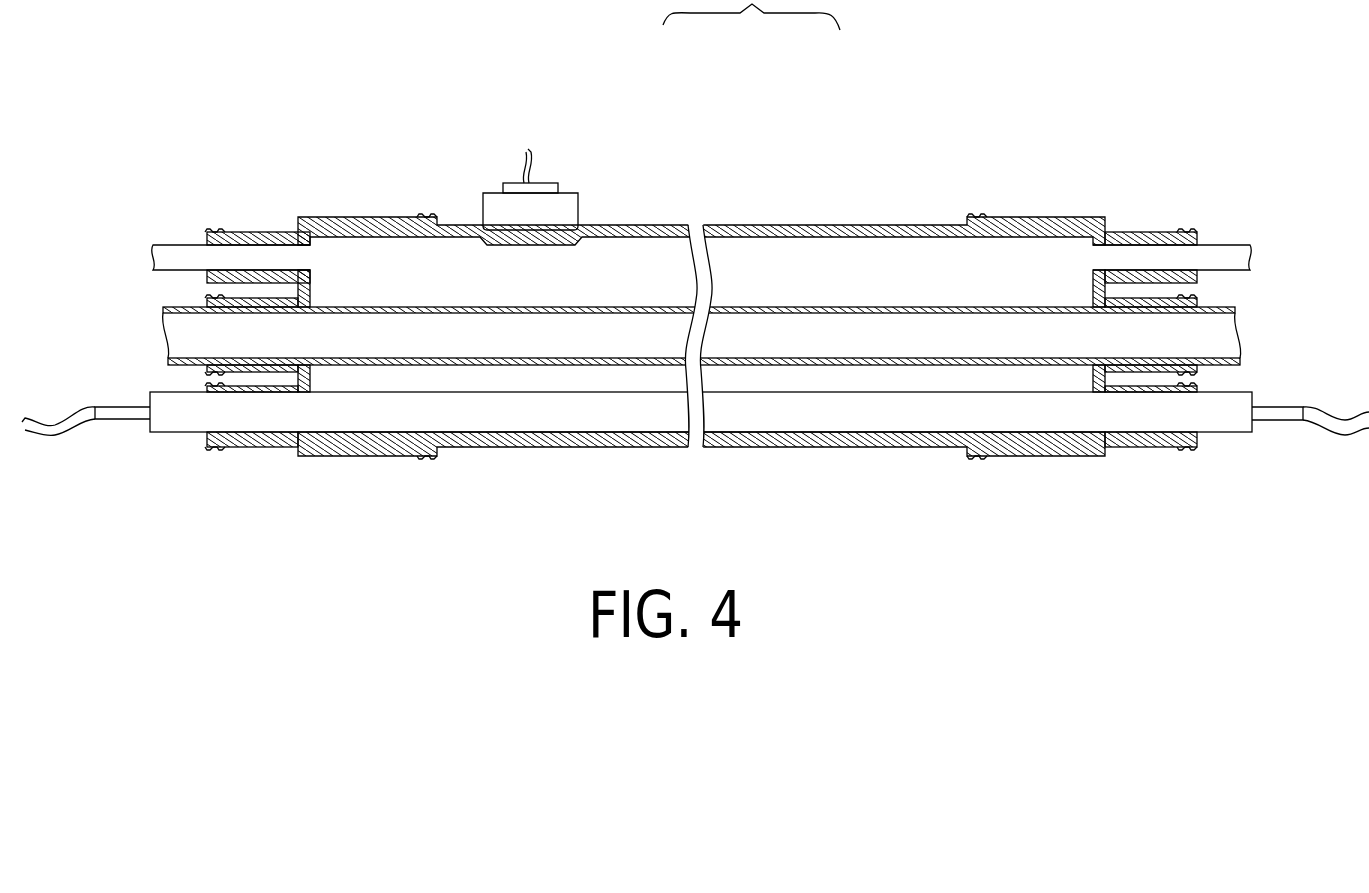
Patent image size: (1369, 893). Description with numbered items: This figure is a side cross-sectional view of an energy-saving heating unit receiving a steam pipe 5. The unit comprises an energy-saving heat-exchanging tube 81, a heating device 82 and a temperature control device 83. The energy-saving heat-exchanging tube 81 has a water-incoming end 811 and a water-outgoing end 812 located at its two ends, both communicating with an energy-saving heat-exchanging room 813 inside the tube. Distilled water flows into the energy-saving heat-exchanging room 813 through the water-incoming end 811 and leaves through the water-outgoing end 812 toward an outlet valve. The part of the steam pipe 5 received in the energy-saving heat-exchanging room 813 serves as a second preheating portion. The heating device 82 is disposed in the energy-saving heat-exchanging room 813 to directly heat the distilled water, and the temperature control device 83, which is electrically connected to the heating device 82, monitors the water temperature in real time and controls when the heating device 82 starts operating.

The steam pipe 5 is at (495, 363).
The energy-saving heat-exchanging tube 81 is at (738, 225).
The heating device 82 is at (810, 413).
The temperature control device 83 is at (565, 202).
The water-incoming end 811 is at (1143, 232).
The water-outgoing end 812 is at (250, 232).
The energy-saving heat-exchanging room 813 is at (455, 261).